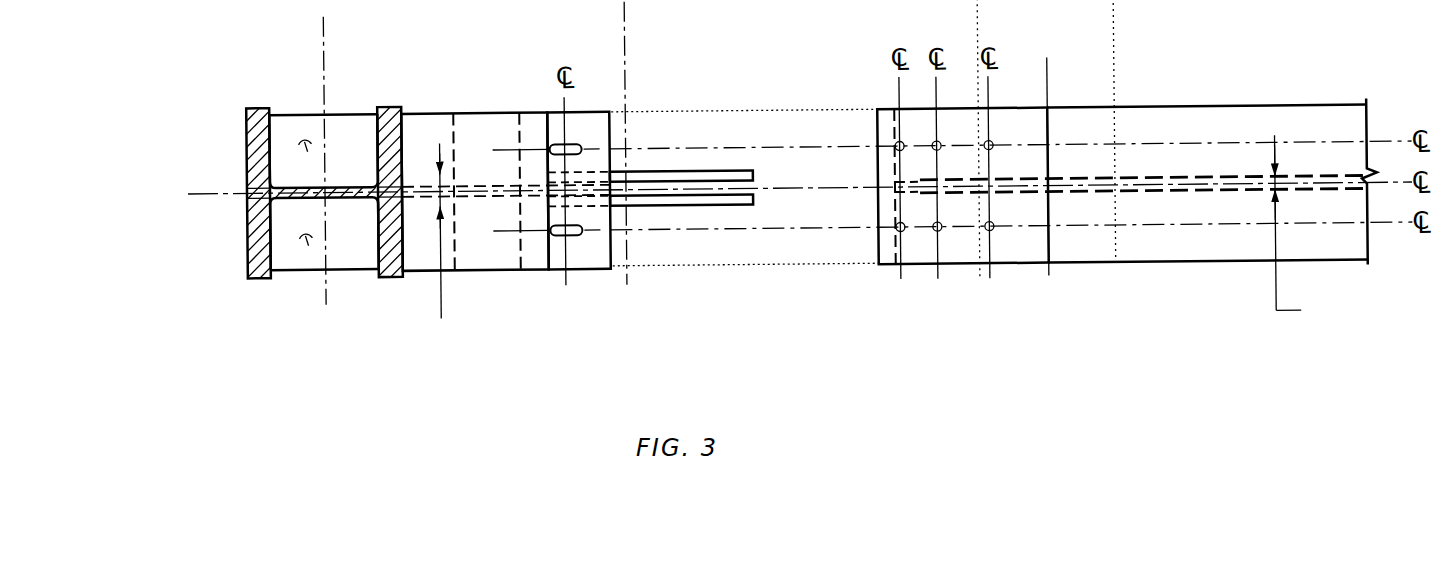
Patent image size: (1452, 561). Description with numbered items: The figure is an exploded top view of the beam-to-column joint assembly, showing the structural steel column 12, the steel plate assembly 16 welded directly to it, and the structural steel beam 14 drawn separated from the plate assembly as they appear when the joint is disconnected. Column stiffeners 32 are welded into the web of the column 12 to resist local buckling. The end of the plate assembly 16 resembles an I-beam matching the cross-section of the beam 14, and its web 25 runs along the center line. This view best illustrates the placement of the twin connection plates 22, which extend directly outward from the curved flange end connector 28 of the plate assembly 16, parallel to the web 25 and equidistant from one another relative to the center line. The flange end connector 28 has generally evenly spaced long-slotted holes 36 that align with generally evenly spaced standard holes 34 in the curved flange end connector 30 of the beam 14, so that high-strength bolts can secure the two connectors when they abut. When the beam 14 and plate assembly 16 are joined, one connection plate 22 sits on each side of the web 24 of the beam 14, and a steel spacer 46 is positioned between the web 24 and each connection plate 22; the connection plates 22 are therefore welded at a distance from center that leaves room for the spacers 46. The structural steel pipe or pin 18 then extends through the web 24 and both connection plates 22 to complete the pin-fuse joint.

The structural steel column 12 is at (318, 192).
The structural steel beam 14 is at (1235, 111).
The steel plate assembly 16 is at (442, 152).
The structural steel pipe or pin 18 is at (1131, 0).
The twin connection plates 22 is at (676, 163).
The web of the beam 24 is at (1298, 217).
The web of the plate assembly 25 is at (440, 231).
The curved flange end connector of the plate assembly 28 is at (592, 268).
The curved flange end connector of the beam 30 is at (925, 154).
The column stiffeners 32 is at (305, 150).
The standard holes 34 is at (988, 236).
The long-slotted holes 36 is at (543, 132).
The steel spacers 46 is at (1095, 180).